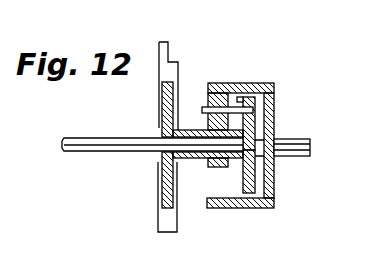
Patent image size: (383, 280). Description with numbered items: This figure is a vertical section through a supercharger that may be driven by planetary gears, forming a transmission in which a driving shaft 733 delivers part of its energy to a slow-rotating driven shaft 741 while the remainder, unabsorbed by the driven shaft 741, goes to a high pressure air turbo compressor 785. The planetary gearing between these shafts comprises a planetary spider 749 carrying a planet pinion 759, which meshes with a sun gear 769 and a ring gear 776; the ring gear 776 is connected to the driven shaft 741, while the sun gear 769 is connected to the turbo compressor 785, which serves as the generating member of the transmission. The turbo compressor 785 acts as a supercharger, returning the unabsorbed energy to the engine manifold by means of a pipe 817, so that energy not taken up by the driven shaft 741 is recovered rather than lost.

The driving shaft 733 is at (104, 137).
The driven shaft 741 is at (309, 147).
The planetary spider 749 is at (250, 176).
The planet pinion 759 is at (249, 85).
The sun gear 769 is at (250, 124).
The ring gear 776 is at (226, 84).
The high pressure turbo compressor 785 is at (178, 75).
The pipe 817 is at (167, 44).